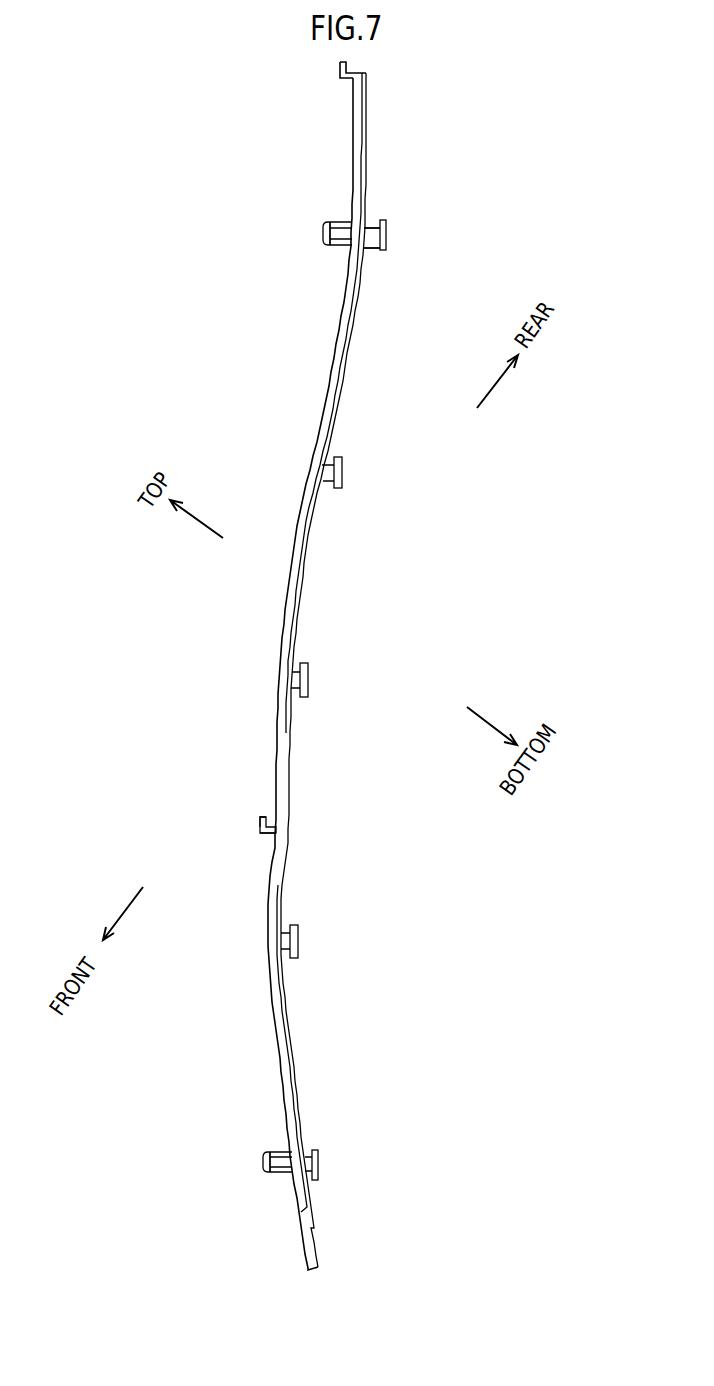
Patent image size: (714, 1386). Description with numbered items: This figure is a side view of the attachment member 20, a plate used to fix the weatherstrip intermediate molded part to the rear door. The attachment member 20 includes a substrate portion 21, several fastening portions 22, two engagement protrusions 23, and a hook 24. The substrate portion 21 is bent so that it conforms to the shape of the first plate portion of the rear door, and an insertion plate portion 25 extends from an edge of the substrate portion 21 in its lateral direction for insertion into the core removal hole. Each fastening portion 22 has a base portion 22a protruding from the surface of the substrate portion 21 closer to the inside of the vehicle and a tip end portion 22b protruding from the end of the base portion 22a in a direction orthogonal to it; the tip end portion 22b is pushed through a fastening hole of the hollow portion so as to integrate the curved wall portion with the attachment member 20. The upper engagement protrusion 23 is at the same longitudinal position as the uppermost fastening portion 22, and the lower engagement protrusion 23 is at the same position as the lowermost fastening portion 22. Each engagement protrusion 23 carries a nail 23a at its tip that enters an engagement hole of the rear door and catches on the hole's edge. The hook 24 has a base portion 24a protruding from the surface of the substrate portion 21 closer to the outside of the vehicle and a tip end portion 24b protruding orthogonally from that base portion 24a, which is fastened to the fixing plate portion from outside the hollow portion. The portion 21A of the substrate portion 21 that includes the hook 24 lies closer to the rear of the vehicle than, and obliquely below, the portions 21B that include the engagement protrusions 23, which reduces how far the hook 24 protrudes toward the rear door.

The attachment member 20 is at (414, 113).
The substrate portion 21 is at (321, 412).
The portion of the substrate portion including the hook 21A is at (287, 826).
The portion of the substrate portion including the engagement protrusion 21B is at (367, 217).
The fastening portion 22 is at (386, 238).
The base portion 22a is at (373, 248).
The tip end portion 22b is at (368, 223).
The engagement protrusion 23 is at (323, 226).
The nail 23a is at (337, 222).
The hook 24 is at (260, 828).
The base portion 24a is at (268, 833).
The tip end portion 24b is at (260, 818).
The insertion plate portion 25 is at (312, 565).